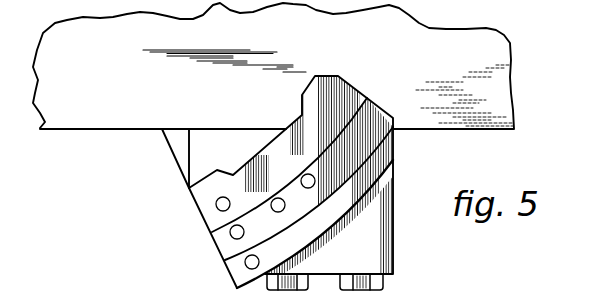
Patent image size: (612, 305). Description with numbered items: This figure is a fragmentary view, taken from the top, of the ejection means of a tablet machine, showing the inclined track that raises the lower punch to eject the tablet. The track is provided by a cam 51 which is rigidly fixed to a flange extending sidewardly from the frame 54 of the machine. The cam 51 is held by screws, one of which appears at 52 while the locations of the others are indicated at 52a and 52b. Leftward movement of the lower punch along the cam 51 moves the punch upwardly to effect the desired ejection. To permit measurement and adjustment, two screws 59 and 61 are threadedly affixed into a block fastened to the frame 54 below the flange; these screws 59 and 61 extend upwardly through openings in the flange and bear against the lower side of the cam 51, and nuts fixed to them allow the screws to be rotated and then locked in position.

The frame 54 is at (124, 127).
The cam 51 is at (394, 145).
The screw 52 is at (280, 212).
The screw location 52a is at (258, 265).
The screw location 52b is at (216, 207).
The screw 59 is at (231, 238).
The screw 61 is at (315, 183).